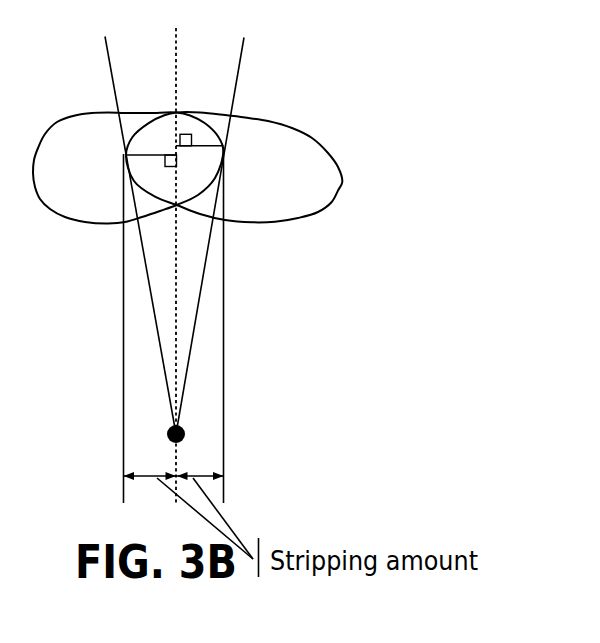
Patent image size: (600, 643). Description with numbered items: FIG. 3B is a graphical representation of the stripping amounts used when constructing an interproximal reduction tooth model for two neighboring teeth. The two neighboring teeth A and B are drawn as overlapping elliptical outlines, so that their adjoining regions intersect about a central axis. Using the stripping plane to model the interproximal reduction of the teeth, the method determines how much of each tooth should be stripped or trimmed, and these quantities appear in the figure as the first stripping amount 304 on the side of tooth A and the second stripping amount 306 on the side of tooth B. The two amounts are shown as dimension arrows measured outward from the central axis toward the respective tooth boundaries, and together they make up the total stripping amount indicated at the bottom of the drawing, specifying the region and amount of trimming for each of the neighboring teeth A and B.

The stripping amount 304 is at (141, 475).
The stripping amount 306 is at (209, 475).
The neighboring tooth A is at (97, 184).
The neighboring tooth B is at (295, 188).